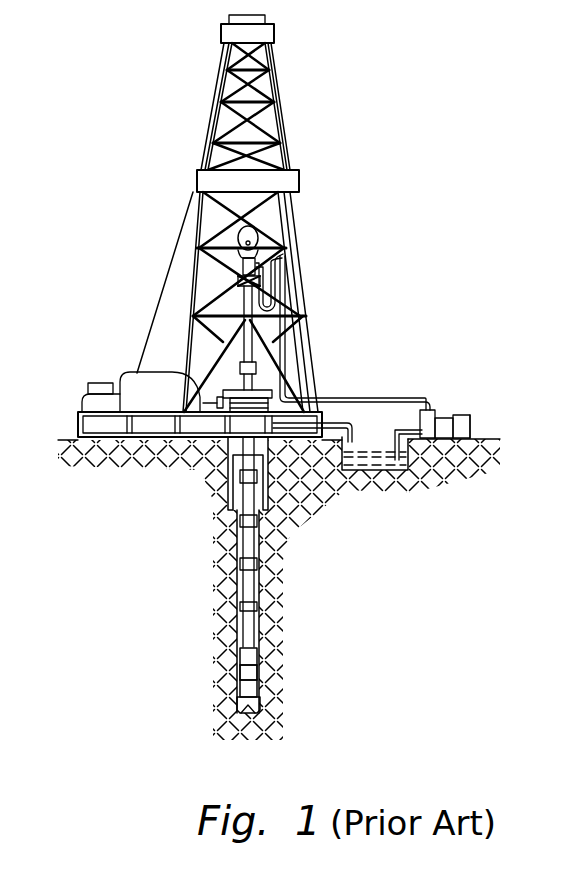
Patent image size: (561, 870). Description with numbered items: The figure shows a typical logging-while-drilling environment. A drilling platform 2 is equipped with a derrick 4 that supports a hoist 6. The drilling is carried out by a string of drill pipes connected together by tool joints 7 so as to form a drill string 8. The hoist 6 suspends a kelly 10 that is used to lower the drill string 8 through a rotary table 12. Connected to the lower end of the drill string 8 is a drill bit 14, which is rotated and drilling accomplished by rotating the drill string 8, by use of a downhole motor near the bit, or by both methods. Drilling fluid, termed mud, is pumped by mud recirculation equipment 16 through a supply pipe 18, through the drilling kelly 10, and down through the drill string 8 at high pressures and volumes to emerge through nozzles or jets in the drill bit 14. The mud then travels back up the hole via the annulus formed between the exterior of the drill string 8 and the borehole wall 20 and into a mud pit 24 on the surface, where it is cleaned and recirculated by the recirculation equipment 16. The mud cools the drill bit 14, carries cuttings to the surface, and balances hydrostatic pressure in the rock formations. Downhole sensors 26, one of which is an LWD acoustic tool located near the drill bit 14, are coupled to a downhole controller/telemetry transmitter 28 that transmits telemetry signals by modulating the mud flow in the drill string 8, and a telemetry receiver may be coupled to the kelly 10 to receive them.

The drilling platform 2 is at (77, 425).
The derrick 4 is at (279, 124).
The hoist 6 is at (253, 236).
The tool joints 7 is at (242, 522).
The drill string 8 is at (243, 547).
The kelly 10 is at (246, 303).
The rotary table 12 is at (268, 370).
The drill bit 14 is at (238, 705).
The mud recirculation equipment 16 is at (438, 418).
The supply pipe 18 is at (387, 399).
The borehole wall 20 is at (242, 592).
The mud pit 24 is at (370, 468).
The downhole sensors 26 is at (247, 675).
The downhole controller/telemetry transmitter 28 is at (243, 658).